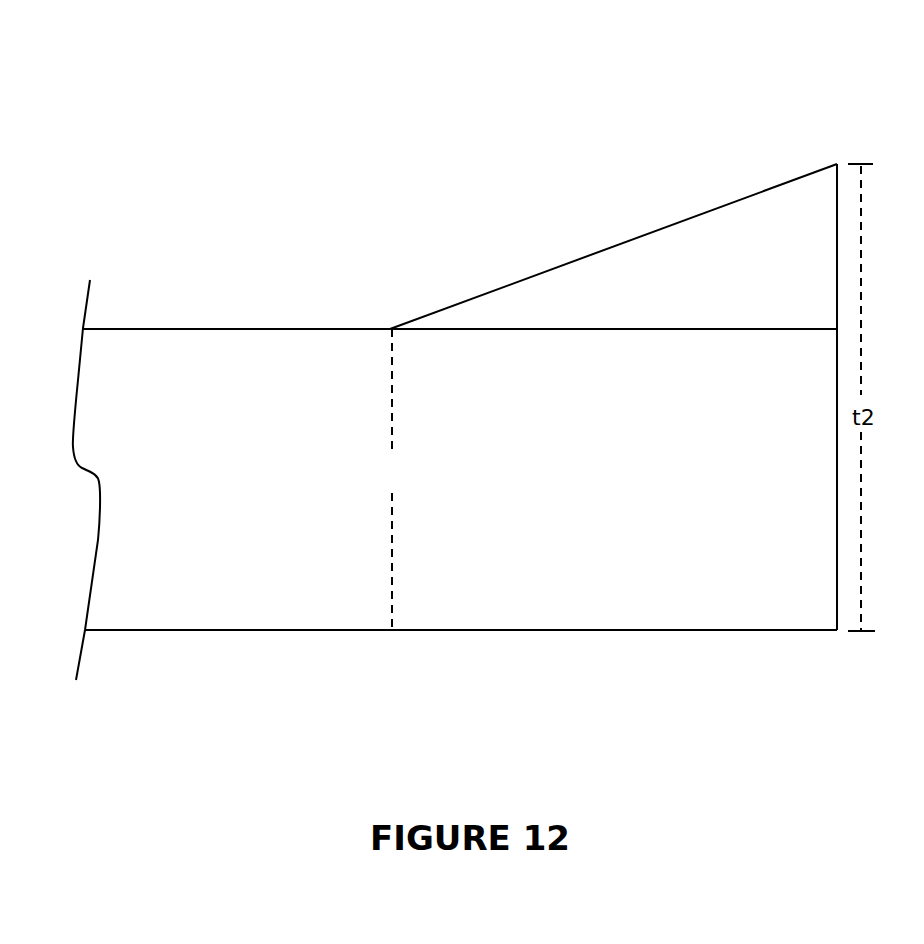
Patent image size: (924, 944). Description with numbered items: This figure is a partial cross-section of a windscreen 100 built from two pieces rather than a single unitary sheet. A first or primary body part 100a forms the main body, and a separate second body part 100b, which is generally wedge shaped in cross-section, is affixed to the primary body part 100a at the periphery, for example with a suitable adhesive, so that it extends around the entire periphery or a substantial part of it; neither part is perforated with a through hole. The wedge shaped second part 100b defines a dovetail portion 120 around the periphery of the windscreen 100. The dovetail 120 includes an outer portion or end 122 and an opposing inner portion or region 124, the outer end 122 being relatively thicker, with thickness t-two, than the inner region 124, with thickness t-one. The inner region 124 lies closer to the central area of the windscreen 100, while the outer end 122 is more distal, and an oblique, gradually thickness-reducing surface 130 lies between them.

The windscreen 100 is at (108, 216).
The first or primary body part 100a is at (553, 572).
The second body part 100b is at (726, 275).
The oblique surface 130 is at (634, 237).
The inner portion or region 124 is at (388, 518).
The outer portion or end 122 is at (832, 545).
The dovetail portion 120 is at (763, 725).